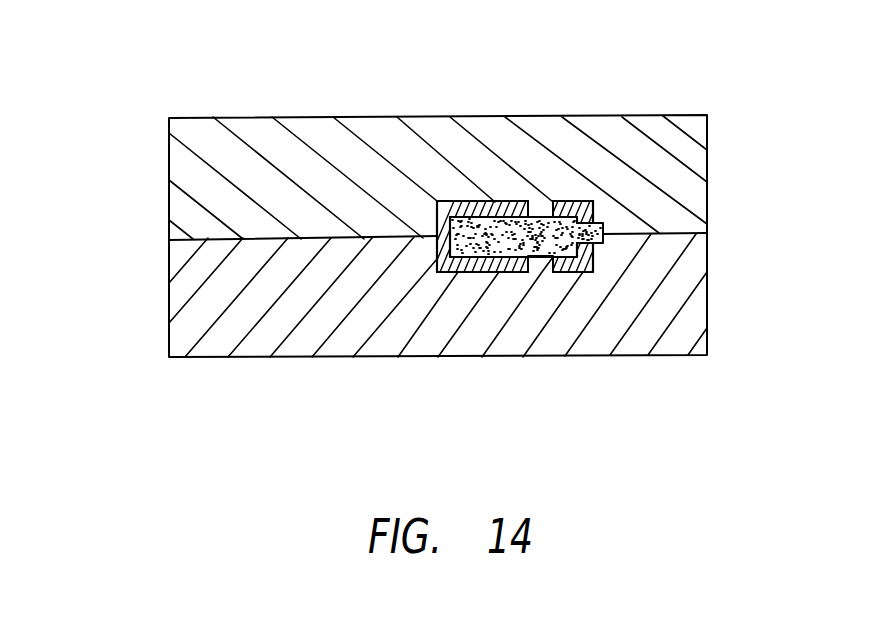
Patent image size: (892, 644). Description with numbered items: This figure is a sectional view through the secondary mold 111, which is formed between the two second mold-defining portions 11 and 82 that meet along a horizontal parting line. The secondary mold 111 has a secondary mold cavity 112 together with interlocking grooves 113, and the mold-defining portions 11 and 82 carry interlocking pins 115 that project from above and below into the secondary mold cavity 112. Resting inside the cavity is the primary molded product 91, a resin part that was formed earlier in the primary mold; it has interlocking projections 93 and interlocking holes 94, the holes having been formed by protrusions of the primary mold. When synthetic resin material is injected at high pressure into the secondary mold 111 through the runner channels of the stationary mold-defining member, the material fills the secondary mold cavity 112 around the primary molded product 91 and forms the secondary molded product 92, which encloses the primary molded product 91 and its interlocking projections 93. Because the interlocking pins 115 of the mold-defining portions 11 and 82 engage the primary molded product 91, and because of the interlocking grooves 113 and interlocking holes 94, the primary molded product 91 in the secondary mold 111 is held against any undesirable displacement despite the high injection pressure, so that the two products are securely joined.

The second mold-defining portion 11 is at (168, 300).
The second mold-defining portion 82 is at (168, 140).
The primary molded product 91 is at (481, 275).
The secondary molded product 92 is at (447, 275).
The interlocking projections 93 is at (603, 243).
The interlocking holes 94 is at (523, 201).
The secondary mold 111 is at (445, 202).
The secondary mold cavity 112 is at (462, 201).
The interlocking grooves 113 is at (597, 203).
The interlocking pins 115 is at (542, 212).